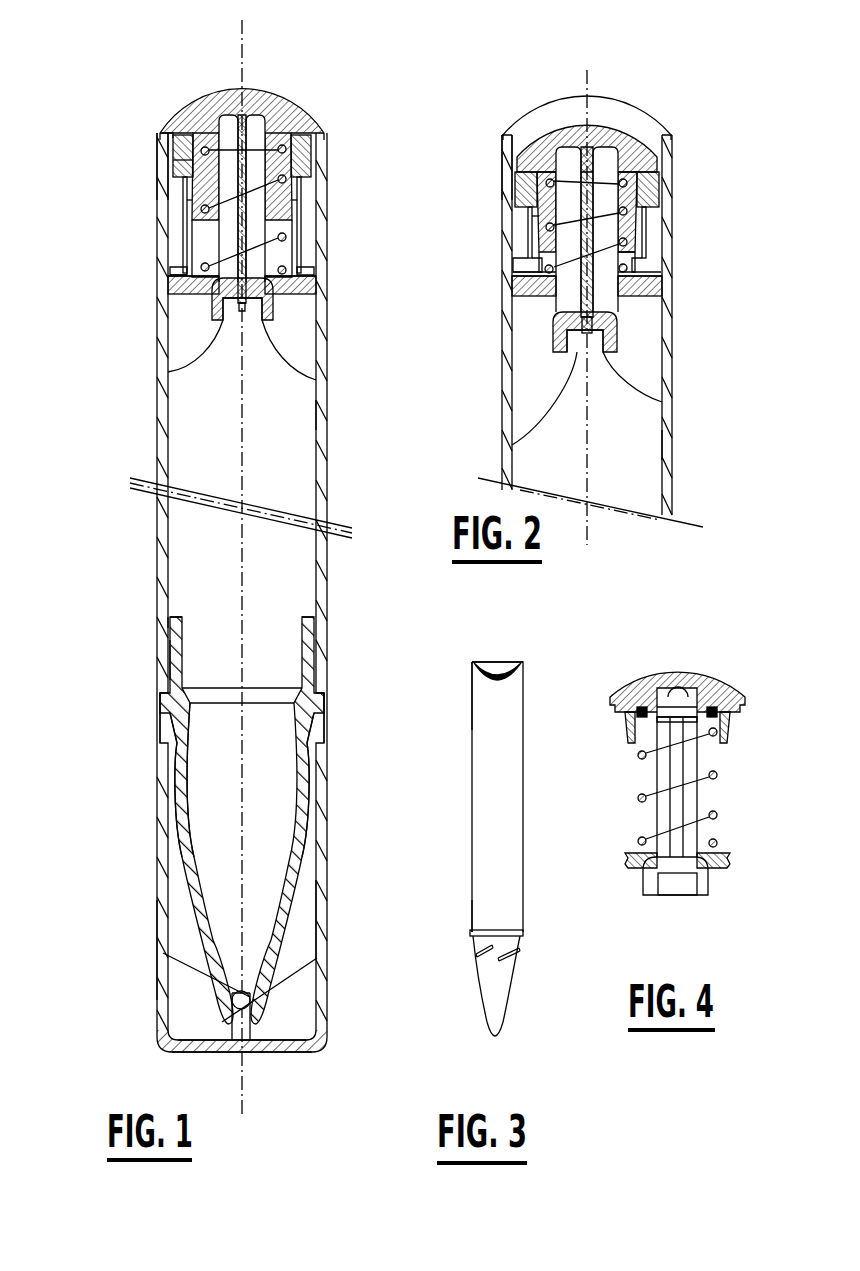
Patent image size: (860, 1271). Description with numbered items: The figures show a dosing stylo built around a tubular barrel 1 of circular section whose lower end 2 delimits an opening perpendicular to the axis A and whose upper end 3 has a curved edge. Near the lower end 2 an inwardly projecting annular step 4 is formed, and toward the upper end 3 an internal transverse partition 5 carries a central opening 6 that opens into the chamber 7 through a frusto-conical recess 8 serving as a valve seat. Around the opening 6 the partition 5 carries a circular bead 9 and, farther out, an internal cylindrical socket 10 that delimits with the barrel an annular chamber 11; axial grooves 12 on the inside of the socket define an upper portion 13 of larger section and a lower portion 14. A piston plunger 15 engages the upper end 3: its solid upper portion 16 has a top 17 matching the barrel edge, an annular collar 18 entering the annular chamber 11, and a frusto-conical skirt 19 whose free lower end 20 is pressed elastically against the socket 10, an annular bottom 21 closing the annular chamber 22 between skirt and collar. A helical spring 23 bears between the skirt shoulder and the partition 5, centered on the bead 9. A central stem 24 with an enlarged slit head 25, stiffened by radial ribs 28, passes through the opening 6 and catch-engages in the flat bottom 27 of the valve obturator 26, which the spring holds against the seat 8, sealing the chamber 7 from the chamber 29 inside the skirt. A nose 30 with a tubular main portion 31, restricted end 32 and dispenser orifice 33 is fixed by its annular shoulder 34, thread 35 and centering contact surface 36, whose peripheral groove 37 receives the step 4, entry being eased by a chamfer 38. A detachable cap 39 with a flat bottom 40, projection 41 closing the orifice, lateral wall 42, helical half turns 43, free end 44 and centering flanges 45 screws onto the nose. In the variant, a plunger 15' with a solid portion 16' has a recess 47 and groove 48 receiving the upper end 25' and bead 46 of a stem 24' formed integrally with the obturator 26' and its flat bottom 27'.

In FIG. 1, the tubular barrel 1 is at (323, 482).
In FIG. 2, the tubular barrel 1 is at (506, 458).
In FIG. 3, the tubular barrel 1 is at (486, 806).
In FIG. 1, the lower end 2 is at (305, 691).
In FIG. 3, the lower end 2 is at (478, 926).
In FIG. 1, the upper end 3 is at (325, 140).
In FIG. 2, the upper end 3 is at (671, 136).
In FIG. 3, the upper end 3 is at (481, 672).
In FIG. 1, the annular step 4 is at (317, 644).
In FIG. 1, the internal transverse partition 5 is at (293, 293).
In FIG. 2, the internal transverse partition 5 is at (643, 333).
In FIG. 4, the internal transverse partition 5 is at (637, 858).
In FIG. 1, the central opening 6 is at (287, 287).
In FIG. 2, the central opening 6 is at (630, 298).
In FIG. 1, the chamber 7 is at (290, 408).
In FIG. 2, the chamber 7 is at (632, 443).
In FIG. 2, the frusto-conical recess 8 is at (558, 343).
In FIG. 1, the circular bead 9 is at (200, 274).
In FIG. 2, the circular bead 9 is at (641, 266).
In FIG. 1, the internal cylindrical socket 10 is at (302, 235).
In FIG. 2, the internal cylindrical socket 10 is at (641, 238).
In FIG. 1, the annular chamber 11 is at (172, 268).
In FIG. 2, the annular chamber 11 is at (522, 256).
In FIG. 1, the axial grooves 12 is at (185, 186).
In FIG. 2, the axial grooves 12 is at (525, 183).
In FIG. 1, the upper portion 13 is at (192, 202).
In FIG. 2, the upper portion 13 is at (530, 216).
In FIG. 1, the portion 14 is at (184, 237).
In FIG. 2, the portion 14 is at (530, 263).
In FIG. 1, the piston plunger 15 is at (242, 74).
In FIG. 2, the piston plunger 15 is at (591, 86).
In FIG. 3, the piston plunger 15 is at (514, 633).
In FIG. 1, the upper portion 16 is at (242, 88).
In FIG. 2, the upper portion 16 is at (591, 105).
In FIG. 1, the top 17 is at (204, 140).
In FIG. 2, the top 17 is at (552, 150).
In FIG. 3, the top 17 is at (486, 670).
In FIG. 1, the lateral annular collar 18 is at (174, 152).
In FIG. 2, the lateral annular collar 18 is at (518, 195).
In FIG. 1, the skirt 19 is at (294, 172).
In FIG. 2, the skirt 19 is at (646, 227).
In FIG. 1, the free lower end 20 is at (302, 231).
In FIG. 2, the free lower end 20 is at (538, 273).
In FIG. 1, the annular bottom 21 is at (178, 140).
In FIG. 1, the annular chamber 22 is at (178, 159).
In FIG. 1, the helical spring 23 is at (207, 208).
In FIG. 2, the helical spring 23 is at (540, 232).
In FIG. 4, the helical spring 23 is at (638, 800).
In FIG. 1, the central axial stem 24 is at (271, 93).
In FIG. 2, the central axial stem 24 is at (623, 122).
In FIG. 1, the enlarged head 25 is at (156, 356).
In FIG. 2, the enlarged head 25 is at (512, 401).
In FIG. 1, the valve obturator 26 is at (176, 325).
In FIG. 2, the valve obturator 26 is at (525, 360).
In FIG. 1, the flat bottom 27 is at (324, 355).
In FIG. 2, the flat bottom 27 is at (666, 401).
In FIG. 1, the radial ribs 28 is at (230, 127).
In FIG. 2, the radial ribs 28 is at (585, 165).
In FIG. 1, the chamber 29 is at (222, 175).
In FIG. 2, the chamber 29 is at (560, 195).
In FIG. 1, the nose 30 is at (177, 866).
In FIG. 3, the nose 30 is at (494, 1013).
In FIG. 1, the tubular main portion 31 is at (303, 826).
In FIG. 1, the restricted end 32 is at (230, 1003).
In FIG. 1, the axial dispenser orifice 33 is at (232, 993).
In FIG. 1, the annular shoulder 34 is at (163, 695).
In FIG. 3, the annular shoulder 34 is at (471, 938).
In FIG. 1, the thread 35 is at (172, 733).
In FIG. 3, the thread 35 is at (498, 959).
In FIG. 1, the centering contact surface 36 is at (170, 662).
In FIG. 1, the peripheral groove 37 is at (172, 627).
In FIG. 1, the external chamfer 38 is at (313, 627).
In FIG. 1, the detachable cap 39 is at (150, 942).
In FIG. 1, the flat bottom 40 is at (273, 1043).
In FIG. 1, the projection 41 is at (250, 997).
In FIG. 1, the lateral wall 42 is at (318, 922).
In FIG. 1, the helical half turns 43 is at (166, 728).
In FIG. 1, the free end 44 is at (323, 706).
In FIG. 1, the internal centering flanges 45 is at (197, 1025).
In FIG. 4, the annular peripheral bead 46 is at (668, 700).
In FIG. 4, the central recess 47 is at (678, 690).
In FIG. 4, the circular groove 48 is at (698, 700).
In FIG. 4, the plunger 15' is at (698, 671).
In FIG. 4, the solid portion 16' is at (663, 670).
In FIG. 4, the central axial stem 24' is at (628, 787).
In FIG. 4, the upper end portion 25' is at (628, 744).
In FIG. 4, the valve obturator 26' is at (648, 902).
In FIG. 4, the flat bottom 27' is at (691, 912).
In FIG. 1, the axis A is at (240, 420).